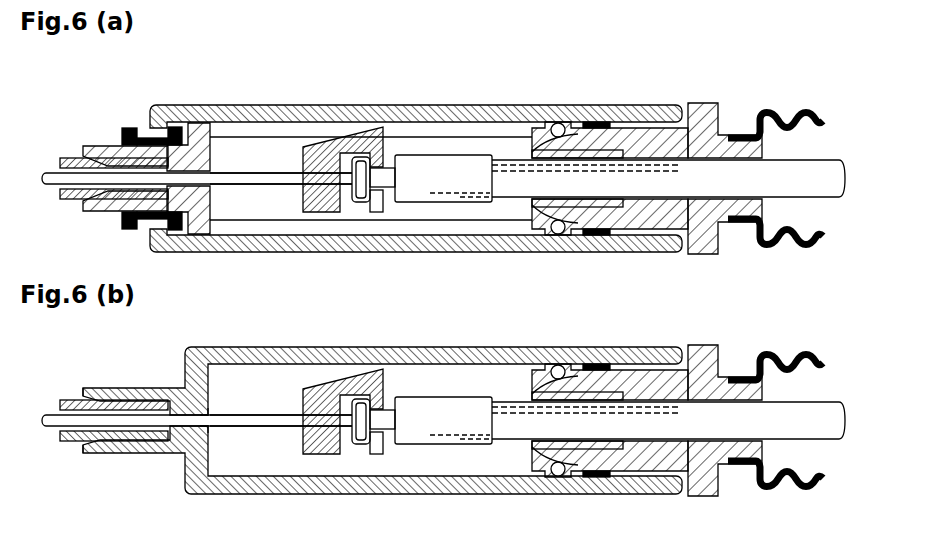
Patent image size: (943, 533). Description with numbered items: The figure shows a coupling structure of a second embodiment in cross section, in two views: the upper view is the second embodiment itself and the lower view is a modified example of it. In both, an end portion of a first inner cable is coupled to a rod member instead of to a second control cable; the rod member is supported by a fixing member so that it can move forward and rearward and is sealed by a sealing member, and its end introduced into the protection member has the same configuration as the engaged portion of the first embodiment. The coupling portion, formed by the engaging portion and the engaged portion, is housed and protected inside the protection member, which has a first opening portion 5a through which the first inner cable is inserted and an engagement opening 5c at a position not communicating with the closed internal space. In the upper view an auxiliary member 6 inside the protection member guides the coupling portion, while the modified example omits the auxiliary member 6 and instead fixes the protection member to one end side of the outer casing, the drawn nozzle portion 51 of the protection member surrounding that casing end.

The first opening portion 5a is at (209, 418).
The engagement opening 5c is at (83, 396).
The nozzle portion 51 is at (135, 388).
The auxiliary member 6 is at (198, 124).